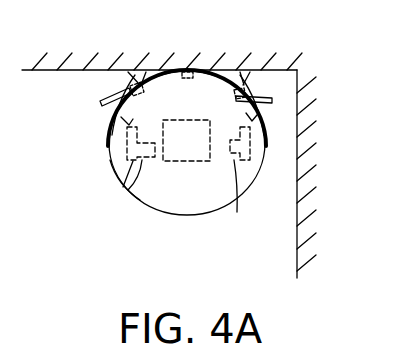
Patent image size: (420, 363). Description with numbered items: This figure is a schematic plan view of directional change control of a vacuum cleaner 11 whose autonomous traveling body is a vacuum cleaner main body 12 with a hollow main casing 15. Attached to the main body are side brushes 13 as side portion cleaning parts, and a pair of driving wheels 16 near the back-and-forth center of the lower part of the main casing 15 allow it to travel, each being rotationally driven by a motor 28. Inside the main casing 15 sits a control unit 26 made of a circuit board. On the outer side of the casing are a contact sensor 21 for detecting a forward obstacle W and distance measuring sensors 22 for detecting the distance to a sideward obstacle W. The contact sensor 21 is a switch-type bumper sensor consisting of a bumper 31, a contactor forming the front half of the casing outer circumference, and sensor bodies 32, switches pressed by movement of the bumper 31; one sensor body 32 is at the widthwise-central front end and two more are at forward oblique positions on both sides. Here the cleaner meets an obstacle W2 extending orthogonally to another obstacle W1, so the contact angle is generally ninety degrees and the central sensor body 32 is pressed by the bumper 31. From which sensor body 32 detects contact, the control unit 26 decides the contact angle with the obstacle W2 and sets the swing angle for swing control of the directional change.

The vacuum cleaner 11 is at (106, 91).
The vacuum cleaner main body 12 is at (140, 202).
The side brushes 13 is at (124, 81).
The main casing 15 is at (212, 214).
The driving wheels 16 is at (130, 152).
The contact sensor 21 is at (158, 74).
The distance measuring sensors 22 is at (110, 137).
The control unit 26 is at (173, 162).
The motors 28 is at (130, 180).
The bumper 31 is at (112, 122).
The sensor body 32 is at (200, 68).
The obstacle W is at (214, 147).
The obstacle W1 is at (310, 200).
The obstacle W2 is at (258, 68).